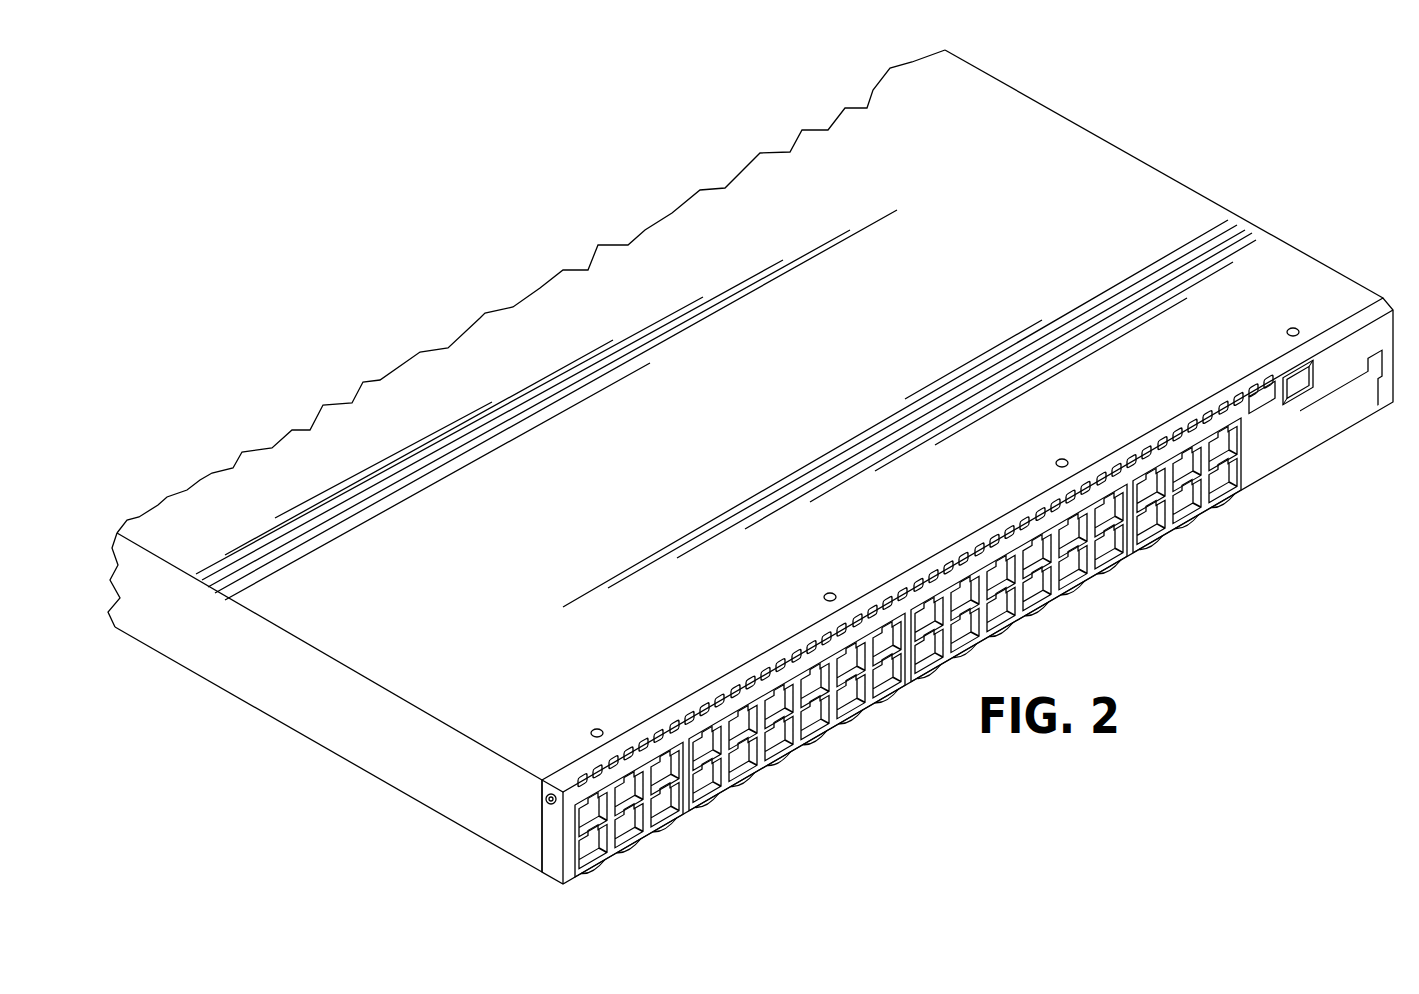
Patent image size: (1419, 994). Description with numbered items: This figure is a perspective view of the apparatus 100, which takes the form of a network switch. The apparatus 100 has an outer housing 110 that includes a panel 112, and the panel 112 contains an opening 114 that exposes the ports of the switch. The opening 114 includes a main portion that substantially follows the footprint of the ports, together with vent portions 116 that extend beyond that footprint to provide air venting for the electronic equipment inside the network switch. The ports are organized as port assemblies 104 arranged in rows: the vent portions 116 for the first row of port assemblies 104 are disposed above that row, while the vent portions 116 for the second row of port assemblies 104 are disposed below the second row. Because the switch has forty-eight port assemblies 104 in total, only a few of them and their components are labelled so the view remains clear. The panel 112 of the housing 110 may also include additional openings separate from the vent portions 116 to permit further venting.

The apparatus 100 is at (550, 240).
The port assemblies 104 is at (1130, 486).
The housing 110 is at (1160, 175).
The panel 112 is at (1243, 372).
The opening 114 is at (578, 831).
The vent portions 116 is at (1205, 442).